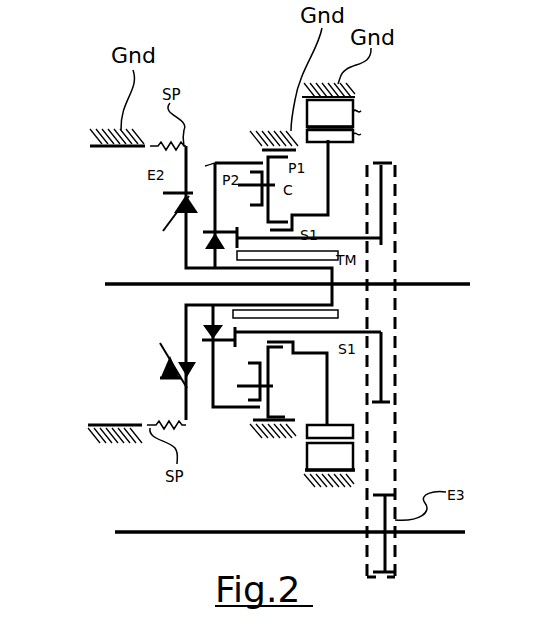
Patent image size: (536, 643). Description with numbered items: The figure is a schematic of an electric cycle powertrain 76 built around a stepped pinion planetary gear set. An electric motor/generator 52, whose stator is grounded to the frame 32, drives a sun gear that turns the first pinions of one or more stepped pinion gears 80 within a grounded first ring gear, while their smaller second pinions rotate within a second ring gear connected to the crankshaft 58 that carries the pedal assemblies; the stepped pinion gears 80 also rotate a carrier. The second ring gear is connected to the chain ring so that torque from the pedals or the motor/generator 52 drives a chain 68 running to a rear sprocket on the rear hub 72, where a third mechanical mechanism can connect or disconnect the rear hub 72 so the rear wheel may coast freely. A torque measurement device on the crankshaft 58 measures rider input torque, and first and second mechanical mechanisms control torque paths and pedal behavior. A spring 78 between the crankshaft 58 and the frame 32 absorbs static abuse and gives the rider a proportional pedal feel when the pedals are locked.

The frame 32 is at (103, 124).
The electric motor/generator 52 is at (379, 117).
The crankshaft 58 is at (441, 283).
The chain 68 is at (397, 247).
The rear hub 72 is at (423, 534).
The powertrain 76 is at (406, 100).
The spring 78 is at (240, 150).
The stepped pinion gears 80 is at (258, 148).